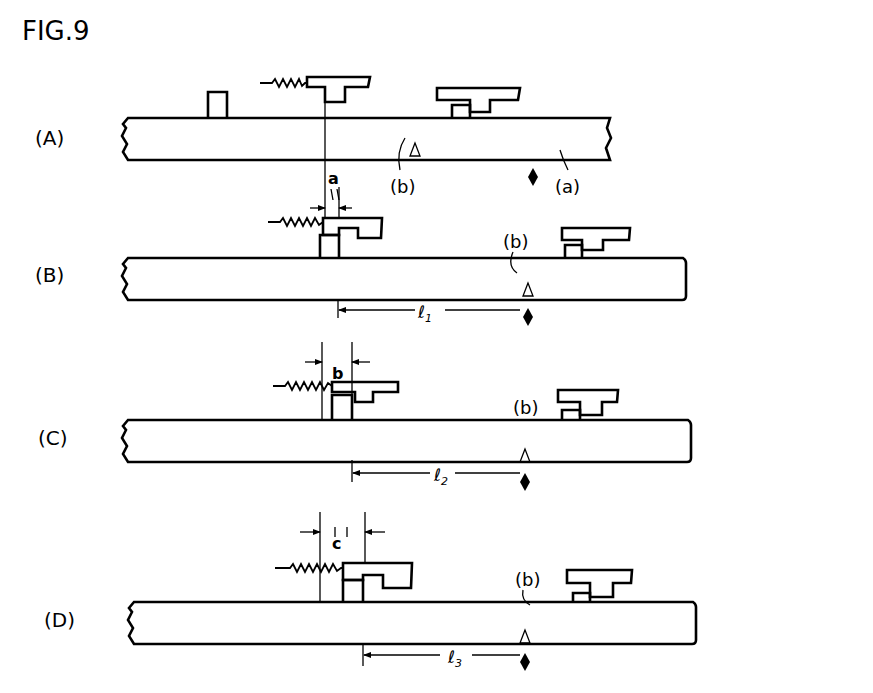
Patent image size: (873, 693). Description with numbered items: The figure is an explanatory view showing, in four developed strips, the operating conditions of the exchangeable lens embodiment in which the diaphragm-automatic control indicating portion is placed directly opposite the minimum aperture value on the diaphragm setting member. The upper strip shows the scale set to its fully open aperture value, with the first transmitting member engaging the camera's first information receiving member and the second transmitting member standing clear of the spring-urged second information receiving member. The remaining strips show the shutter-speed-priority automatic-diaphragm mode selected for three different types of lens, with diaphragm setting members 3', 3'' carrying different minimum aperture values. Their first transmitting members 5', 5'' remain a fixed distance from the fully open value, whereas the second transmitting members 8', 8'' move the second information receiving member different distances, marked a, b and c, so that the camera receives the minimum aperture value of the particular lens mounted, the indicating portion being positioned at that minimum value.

The diaphragm setting member 3' is at (406, 429).
The diaphragm setting member 3'' is at (412, 604).
The first transmitting member 5' is at (543, 388).
The first transmitting member 5'' is at (549, 565).
The second transmitting member 8' is at (311, 408).
The second transmitting member 8'' is at (319, 593).